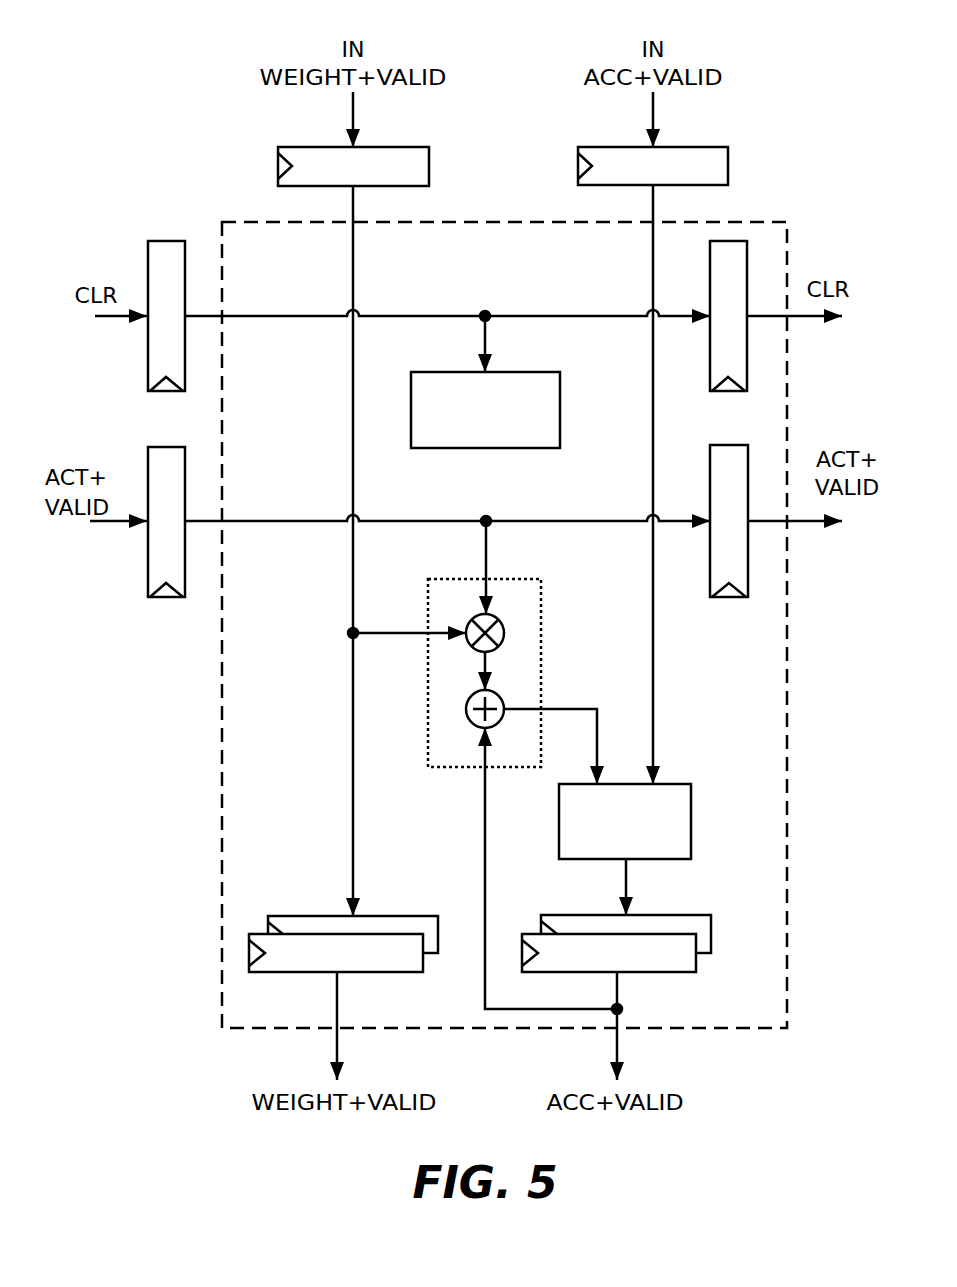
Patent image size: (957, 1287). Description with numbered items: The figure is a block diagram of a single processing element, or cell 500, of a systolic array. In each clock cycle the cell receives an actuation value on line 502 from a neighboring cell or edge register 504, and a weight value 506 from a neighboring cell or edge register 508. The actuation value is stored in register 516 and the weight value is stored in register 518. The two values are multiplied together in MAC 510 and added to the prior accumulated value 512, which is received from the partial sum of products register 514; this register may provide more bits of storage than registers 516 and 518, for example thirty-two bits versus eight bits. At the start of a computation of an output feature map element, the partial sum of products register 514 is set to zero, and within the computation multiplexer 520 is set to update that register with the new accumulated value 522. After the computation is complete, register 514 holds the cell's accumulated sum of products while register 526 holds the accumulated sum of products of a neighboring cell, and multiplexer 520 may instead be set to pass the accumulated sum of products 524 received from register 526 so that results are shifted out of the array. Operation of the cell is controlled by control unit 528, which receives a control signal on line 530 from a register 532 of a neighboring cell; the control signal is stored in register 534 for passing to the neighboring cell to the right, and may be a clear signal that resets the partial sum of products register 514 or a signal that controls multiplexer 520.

The processing element or cell 500 is at (768, 222).
The line 502 is at (303, 521).
The edge register 504 is at (147, 551).
The weight value 506 is at (355, 272).
The edge register 508 is at (392, 147).
The MAC 510 is at (512, 579).
The prior accumulated value 512 is at (485, 797).
The partial sum of products register 514 is at (672, 915).
The register 516 is at (748, 558).
The register 518 is at (316, 916).
The multiplexer 520 is at (683, 784).
The new accumulated value 522 is at (588, 709).
The accumulated sum of products 524 is at (653, 364).
The register 526 is at (692, 147).
The control unit 528 is at (485, 410).
The line 530 is at (297, 316).
The register 532 is at (165, 241).
The register 534 is at (747, 352).